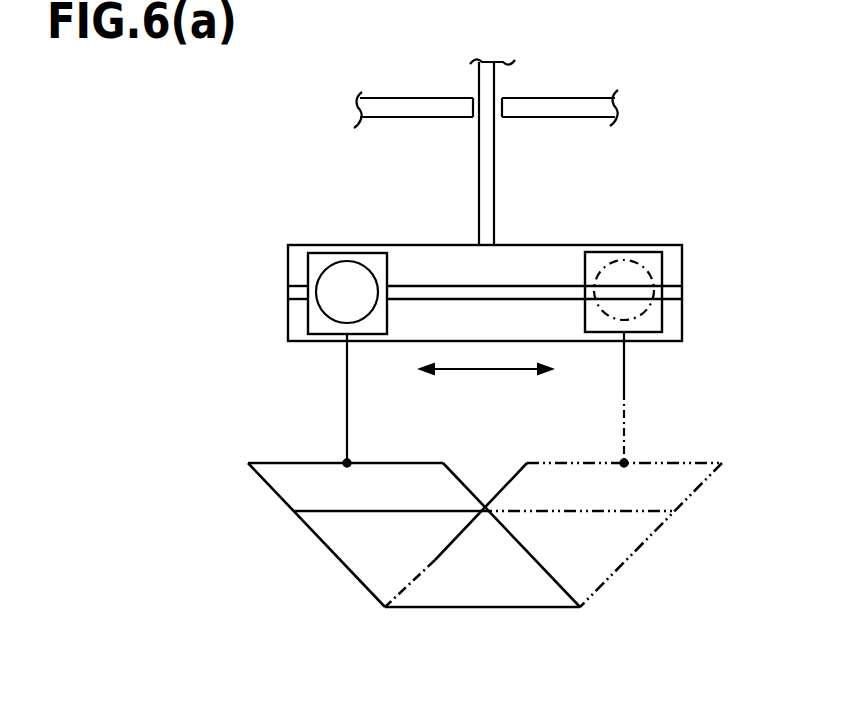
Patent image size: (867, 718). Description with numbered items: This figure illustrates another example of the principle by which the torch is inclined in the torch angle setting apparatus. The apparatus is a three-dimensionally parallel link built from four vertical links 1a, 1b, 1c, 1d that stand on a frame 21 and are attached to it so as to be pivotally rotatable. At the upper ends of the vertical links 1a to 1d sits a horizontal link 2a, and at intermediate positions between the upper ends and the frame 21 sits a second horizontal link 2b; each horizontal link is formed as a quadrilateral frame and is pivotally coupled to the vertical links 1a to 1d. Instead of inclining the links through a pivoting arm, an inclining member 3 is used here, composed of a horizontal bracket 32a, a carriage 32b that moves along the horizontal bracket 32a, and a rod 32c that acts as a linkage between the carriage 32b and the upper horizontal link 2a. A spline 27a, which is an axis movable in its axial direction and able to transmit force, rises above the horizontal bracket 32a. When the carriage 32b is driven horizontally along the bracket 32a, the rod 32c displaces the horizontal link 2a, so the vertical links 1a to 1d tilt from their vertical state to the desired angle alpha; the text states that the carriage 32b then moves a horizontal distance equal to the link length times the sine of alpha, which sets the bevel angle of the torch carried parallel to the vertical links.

The inclining member 3 is at (447, 315).
The spline 27a is at (488, 172).
The horizontal bracket 32a is at (300, 260).
The carriage 32b is at (318, 326).
The rod 32c is at (347, 398).
The vertical link 1a is at (412, 535).
The vertical link 1c is at (320, 540).
The vertical link 1b is at (565, 535).
The vertical link 1d is at (547, 572).
The horizontal link 2a is at (422, 462).
The horizontal link 2b is at (303, 512).
The frame 21 is at (470, 608).